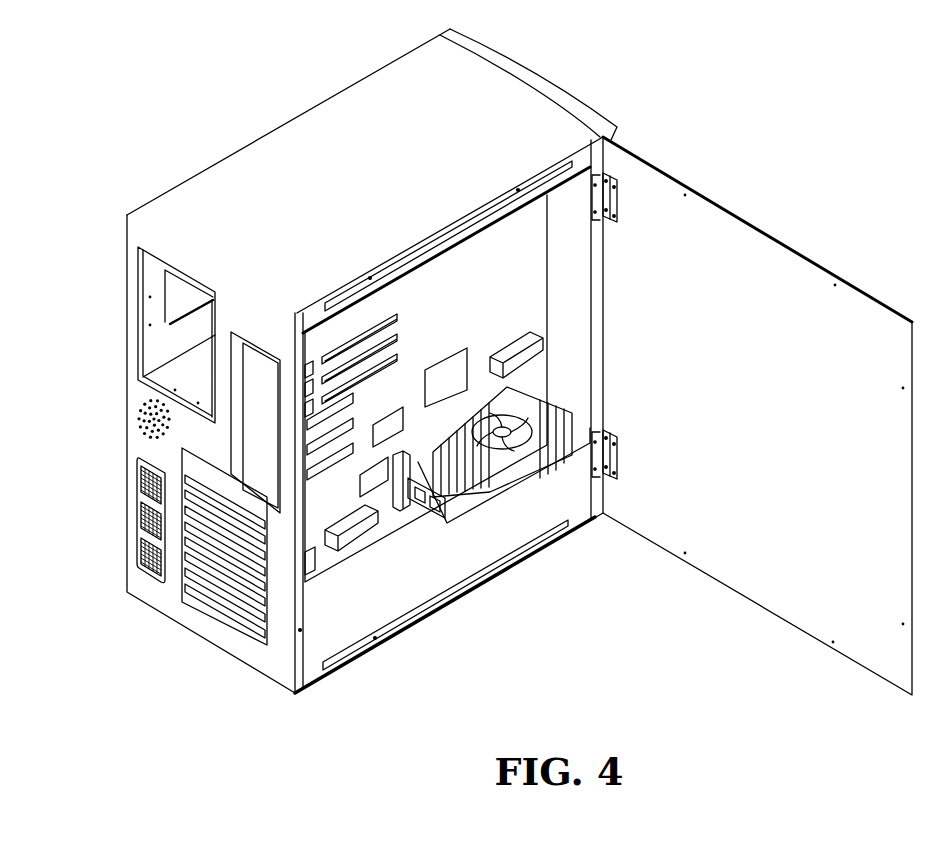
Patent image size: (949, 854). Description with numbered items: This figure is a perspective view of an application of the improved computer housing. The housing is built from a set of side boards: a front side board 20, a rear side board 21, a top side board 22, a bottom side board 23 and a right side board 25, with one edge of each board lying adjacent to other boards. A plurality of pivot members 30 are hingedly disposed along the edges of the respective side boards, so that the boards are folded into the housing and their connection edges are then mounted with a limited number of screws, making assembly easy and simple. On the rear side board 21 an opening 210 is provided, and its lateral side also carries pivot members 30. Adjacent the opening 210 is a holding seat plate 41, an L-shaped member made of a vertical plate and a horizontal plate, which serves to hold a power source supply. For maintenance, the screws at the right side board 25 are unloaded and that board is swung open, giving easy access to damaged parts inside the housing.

The front side board 20 is at (577, 92).
The rear side board 21 is at (118, 470).
The top side board 22 is at (283, 153).
The bottom side board 23 is at (463, 568).
The right side board 25 is at (805, 277).
The pivot member 30 is at (620, 202).
The holding seat plate 41 is at (157, 337).
The opening 210 is at (197, 350).